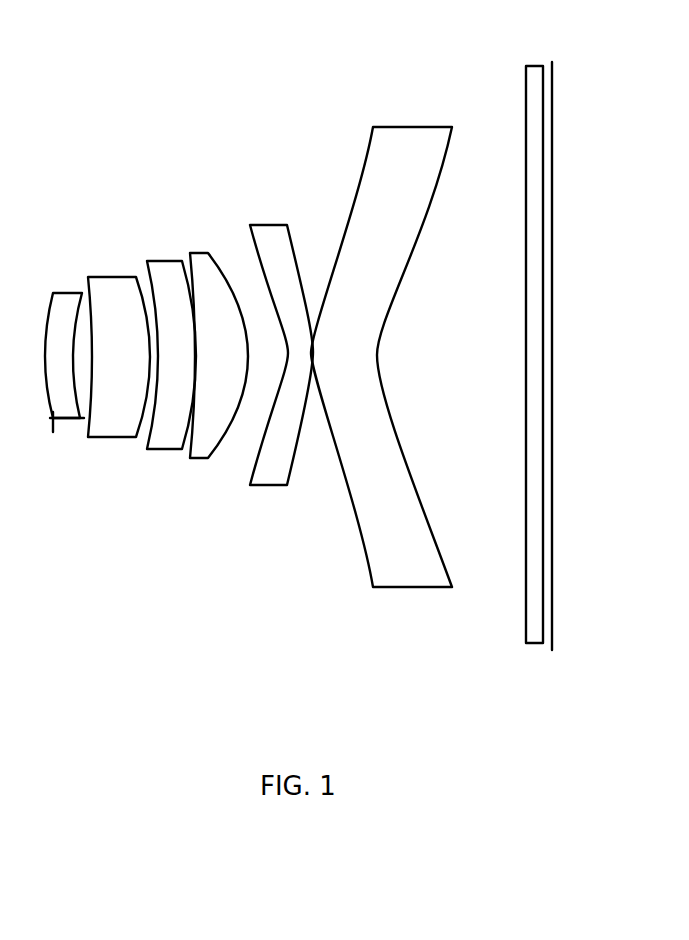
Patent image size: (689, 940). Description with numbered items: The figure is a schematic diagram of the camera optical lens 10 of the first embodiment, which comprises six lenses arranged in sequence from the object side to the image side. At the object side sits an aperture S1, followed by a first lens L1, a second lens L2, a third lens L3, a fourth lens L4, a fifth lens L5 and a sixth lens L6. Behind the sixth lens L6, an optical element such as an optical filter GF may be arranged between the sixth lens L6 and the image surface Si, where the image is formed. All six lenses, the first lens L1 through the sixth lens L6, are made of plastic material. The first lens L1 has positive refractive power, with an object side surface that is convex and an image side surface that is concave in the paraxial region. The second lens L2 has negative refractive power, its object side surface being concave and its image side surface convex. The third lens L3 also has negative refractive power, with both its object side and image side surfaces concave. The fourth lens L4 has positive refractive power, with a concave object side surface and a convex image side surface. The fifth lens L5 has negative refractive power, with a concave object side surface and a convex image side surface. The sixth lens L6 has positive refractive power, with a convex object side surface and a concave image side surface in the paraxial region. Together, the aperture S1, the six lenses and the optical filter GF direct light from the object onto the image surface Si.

The camera optical lens 10 is at (317, 48).
The aperture S1 is at (56, 354).
The first lens L1 is at (64, 345).
The second lens L2 is at (119, 347).
The third lens L3 is at (171, 345).
The fourth lens L4 is at (218, 344).
The fifth lens L5 is at (281, 343).
The sixth lens L6 is at (381, 345).
The optical filter GF is at (527, 344).
The image surface Si is at (555, 345).